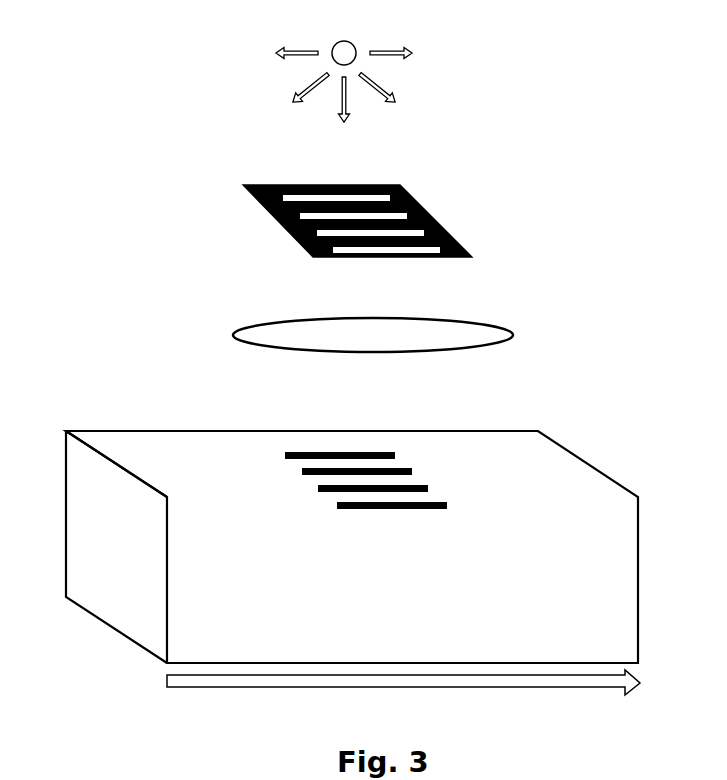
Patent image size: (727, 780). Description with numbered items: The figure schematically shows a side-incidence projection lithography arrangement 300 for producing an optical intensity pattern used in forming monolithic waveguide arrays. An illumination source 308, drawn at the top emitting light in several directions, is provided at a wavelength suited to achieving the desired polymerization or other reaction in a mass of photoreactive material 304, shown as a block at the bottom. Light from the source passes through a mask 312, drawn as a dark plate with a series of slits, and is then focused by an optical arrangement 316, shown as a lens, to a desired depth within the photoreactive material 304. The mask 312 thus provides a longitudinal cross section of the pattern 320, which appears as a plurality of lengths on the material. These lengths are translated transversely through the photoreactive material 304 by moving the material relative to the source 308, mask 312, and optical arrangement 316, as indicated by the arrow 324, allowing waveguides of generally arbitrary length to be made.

The arrangement 300 is at (143, 168).
The photoreactive material 304 is at (127, 428).
The illumination source 308 is at (353, 42).
The mask 312 is at (443, 225).
The optical arrangement 316 is at (494, 325).
The pattern 320 is at (402, 520).
The arrow 324 is at (478, 690).